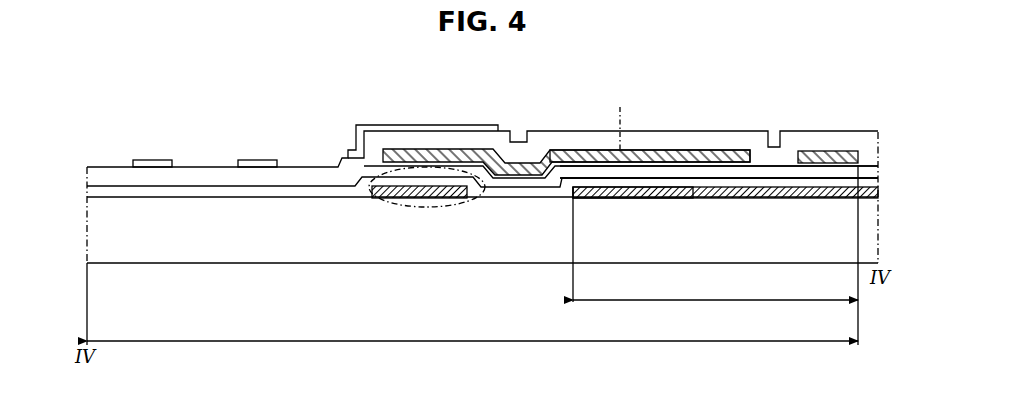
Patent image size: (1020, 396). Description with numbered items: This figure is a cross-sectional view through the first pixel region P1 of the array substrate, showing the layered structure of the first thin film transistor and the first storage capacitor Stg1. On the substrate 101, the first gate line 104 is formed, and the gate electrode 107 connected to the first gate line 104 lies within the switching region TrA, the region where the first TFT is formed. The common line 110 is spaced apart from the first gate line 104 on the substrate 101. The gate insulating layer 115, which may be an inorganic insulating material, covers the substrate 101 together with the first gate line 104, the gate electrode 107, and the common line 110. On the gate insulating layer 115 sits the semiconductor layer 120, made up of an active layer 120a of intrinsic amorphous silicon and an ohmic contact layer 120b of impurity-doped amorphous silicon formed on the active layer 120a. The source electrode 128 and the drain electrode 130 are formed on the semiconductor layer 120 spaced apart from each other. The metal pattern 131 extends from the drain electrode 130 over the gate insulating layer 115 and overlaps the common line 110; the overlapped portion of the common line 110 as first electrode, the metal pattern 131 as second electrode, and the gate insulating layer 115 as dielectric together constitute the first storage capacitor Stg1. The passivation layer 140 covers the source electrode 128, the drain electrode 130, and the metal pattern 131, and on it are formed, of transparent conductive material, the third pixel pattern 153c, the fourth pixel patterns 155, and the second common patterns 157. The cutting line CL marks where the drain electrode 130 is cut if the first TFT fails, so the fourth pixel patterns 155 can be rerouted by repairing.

The substrate 101 is at (828, 245).
The first gate line 104 is at (591, 199).
The gate electrode 107 is at (773, 199).
The common line 110 is at (390, 198).
The gate insulating layer 115 is at (273, 197).
The semiconductor layer 120 is at (675, 230).
The active layer 120a is at (675, 172).
The ohmic contact layer 120b is at (707, 167).
The source electrode 128 is at (823, 151).
The drain electrode 130 is at (689, 150).
The metal pattern 131 is at (470, 149).
The passivation layer 140 is at (558, 139).
The third pixel pattern 153c is at (425, 124).
The fourth pixel patterns 155 is at (150, 160).
The second common patterns 157 is at (257, 160).
The cutting line CL is at (620, 108).
The first storage capacitor Stg1 is at (438, 207).
The switching region TrA is at (715, 291).
The first pixel region P1 is at (472, 332).